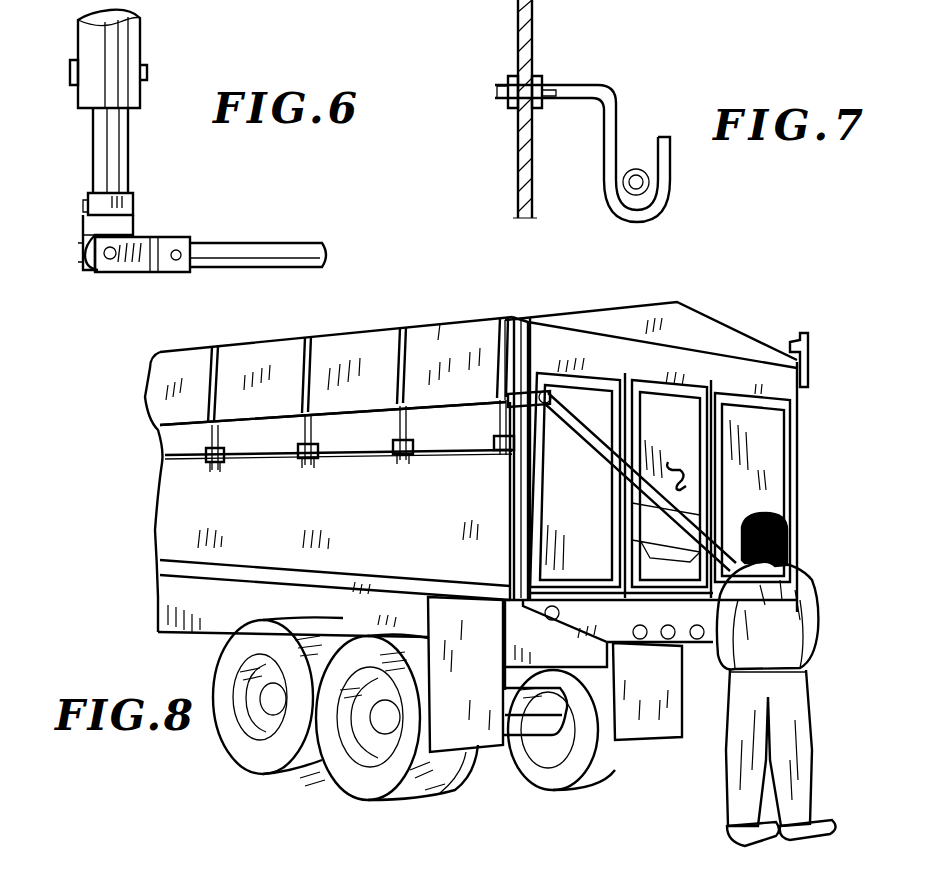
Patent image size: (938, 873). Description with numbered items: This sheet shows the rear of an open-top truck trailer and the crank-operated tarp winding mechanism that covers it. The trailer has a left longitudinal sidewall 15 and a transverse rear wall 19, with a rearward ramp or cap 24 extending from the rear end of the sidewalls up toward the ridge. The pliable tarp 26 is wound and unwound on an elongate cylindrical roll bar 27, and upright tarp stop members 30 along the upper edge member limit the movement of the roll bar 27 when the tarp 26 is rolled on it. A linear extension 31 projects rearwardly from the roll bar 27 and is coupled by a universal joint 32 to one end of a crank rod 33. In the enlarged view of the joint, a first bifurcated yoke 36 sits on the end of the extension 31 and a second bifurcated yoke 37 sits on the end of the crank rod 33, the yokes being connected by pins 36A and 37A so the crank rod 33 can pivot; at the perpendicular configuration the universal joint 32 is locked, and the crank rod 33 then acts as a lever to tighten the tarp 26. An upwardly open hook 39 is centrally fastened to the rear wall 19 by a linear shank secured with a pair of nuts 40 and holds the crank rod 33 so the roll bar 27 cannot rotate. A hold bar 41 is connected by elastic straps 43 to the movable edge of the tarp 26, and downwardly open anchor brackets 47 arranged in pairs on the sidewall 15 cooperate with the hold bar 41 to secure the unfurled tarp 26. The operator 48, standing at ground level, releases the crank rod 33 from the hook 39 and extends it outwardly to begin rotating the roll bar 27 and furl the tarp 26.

In FIG. 8, the left longitudinal sidewall 15 is at (178, 527).
In FIG. 7, the rear wall 19 is at (518, 30).
In FIG. 8, the rear wall 19 is at (778, 428).
In FIG. 8, the rearward ramp or cap 24 is at (680, 325).
In FIG. 8, the tarp 26 is at (455, 345).
In FIG. 6, the roll bar 27 is at (130, 47).
In FIG. 8, the tarp stop member 30 is at (808, 344).
In FIG. 6, the linear extension 31 is at (104, 139).
In FIG. 8, the linear extension 31 is at (536, 402).
In FIG. 6, the universal joint 32 is at (80, 279).
In FIG. 8, the universal joint 32 is at (552, 396).
In FIG. 6, the crank rod 33 is at (255, 250).
In FIG. 7, the crank rod 33 is at (640, 166).
In FIG. 8, the crank rod 33 is at (606, 462).
In FIG. 6, the first bifurcated yoke 36 is at (135, 200).
In FIG. 6, the pin 36A is at (78, 253).
In FIG. 6, the second bifurcated yoke 37 is at (143, 272).
In FIG. 6, the pin 37A is at (112, 262).
In FIG. 7, the hook 39 is at (588, 85).
In FIG. 8, the hook 39 is at (678, 458).
In FIG. 7, the nuts 40 is at (508, 82).
In FIG. 8, the hold bar 41 is at (275, 460).
In FIG. 8, the elastic straps 43 is at (218, 438).
In FIG. 8, the anchor brackets 47 is at (208, 465).
In FIG. 8, the operator 48 is at (808, 610).